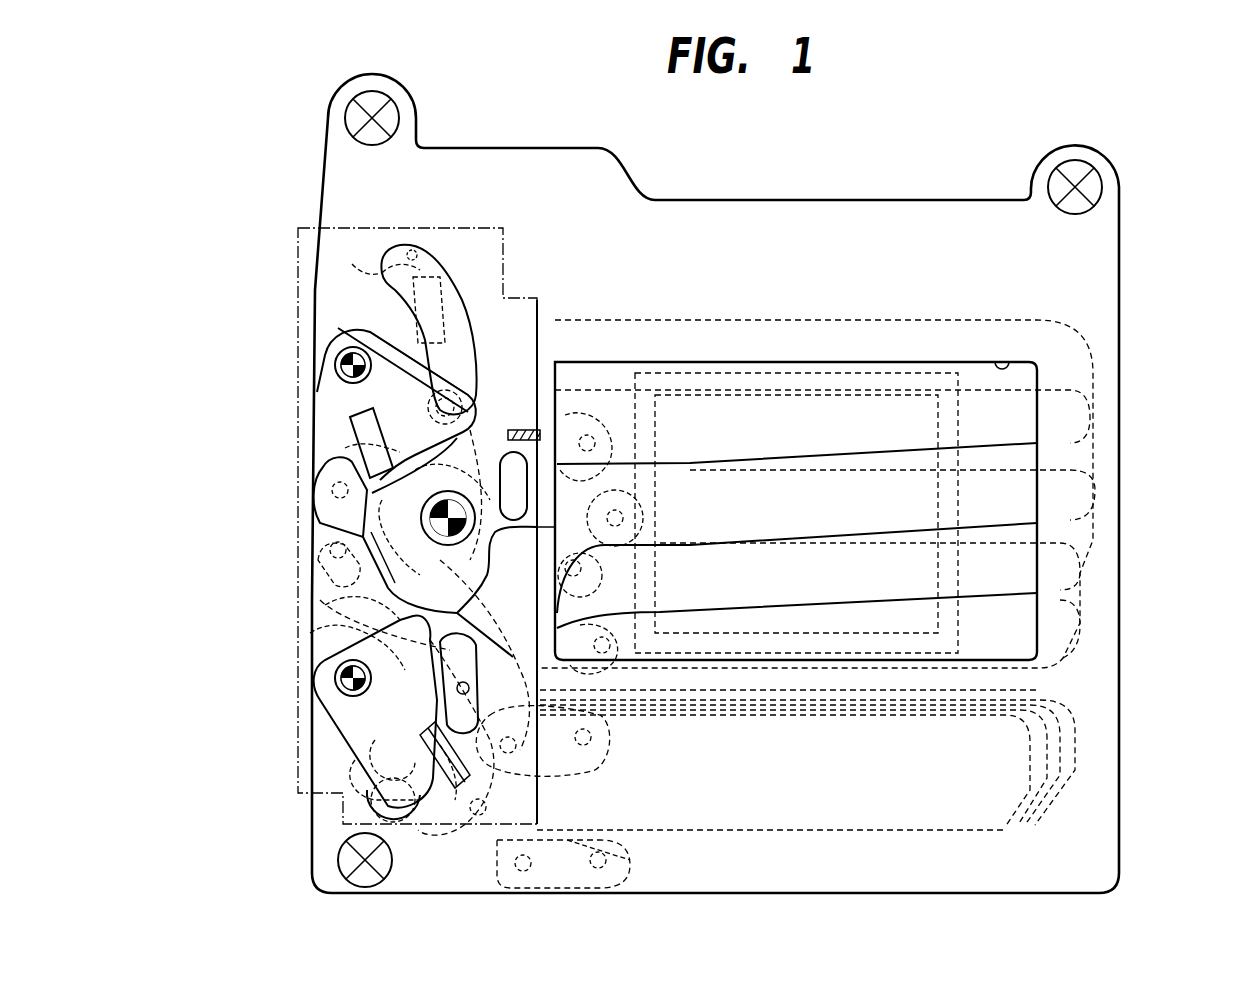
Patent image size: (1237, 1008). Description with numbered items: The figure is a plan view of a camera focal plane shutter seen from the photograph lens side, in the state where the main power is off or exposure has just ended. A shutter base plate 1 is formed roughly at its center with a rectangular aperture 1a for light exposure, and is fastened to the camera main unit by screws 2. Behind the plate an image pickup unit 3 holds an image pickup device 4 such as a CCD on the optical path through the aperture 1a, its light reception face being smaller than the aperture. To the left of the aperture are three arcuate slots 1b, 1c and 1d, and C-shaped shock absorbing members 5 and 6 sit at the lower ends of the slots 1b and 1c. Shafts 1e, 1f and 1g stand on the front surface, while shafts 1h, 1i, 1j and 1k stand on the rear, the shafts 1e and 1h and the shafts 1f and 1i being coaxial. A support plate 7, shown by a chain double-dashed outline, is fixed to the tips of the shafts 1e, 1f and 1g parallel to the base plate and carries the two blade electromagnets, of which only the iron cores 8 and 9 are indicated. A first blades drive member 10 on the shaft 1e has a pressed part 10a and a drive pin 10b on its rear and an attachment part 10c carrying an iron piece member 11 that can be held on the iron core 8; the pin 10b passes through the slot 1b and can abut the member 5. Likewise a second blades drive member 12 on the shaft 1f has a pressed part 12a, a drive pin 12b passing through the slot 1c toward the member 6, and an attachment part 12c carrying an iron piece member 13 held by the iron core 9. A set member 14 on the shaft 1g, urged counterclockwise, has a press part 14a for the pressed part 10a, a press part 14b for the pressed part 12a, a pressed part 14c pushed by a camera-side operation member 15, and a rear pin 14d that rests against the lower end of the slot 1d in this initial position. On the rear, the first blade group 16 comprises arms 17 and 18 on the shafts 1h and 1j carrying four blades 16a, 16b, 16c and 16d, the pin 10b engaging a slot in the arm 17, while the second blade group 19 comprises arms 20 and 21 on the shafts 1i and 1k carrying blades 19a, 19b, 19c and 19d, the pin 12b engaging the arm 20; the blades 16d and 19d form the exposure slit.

The shutter base plate 1 is at (862, 206).
The aperture 1a is at (1005, 363).
The arcuate slot 1b is at (515, 730).
The arcuate slot 1c is at (413, 250).
The arcuate slot 1d is at (320, 560).
The shaft 1e is at (347, 690).
The shaft 1f is at (333, 370).
The shaft 1g is at (520, 362).
The shaft 1h is at (353, 678).
The shaft 1i is at (353, 365).
The shaft 1j is at (325, 545).
The shaft 1k is at (330, 494).
The screw 2 is at (392, 114).
The image pickup unit 3 is at (950, 373).
The image pickup device 4 is at (853, 405).
The shock absorbing member 5 is at (377, 800).
The shock absorbing member 6 is at (505, 452).
The support plate 7 is at (476, 240).
The iron core 8 is at (310, 633).
The iron core 9 is at (378, 260).
The first blades drive member 10 is at (342, 718).
The pressed part 10a is at (318, 670).
The drive pin 10b is at (402, 823).
The attachment part 10c is at (447, 790).
The iron piece member 11 is at (418, 735).
The second blades drive member 12 is at (372, 330).
The pressed part 12a is at (332, 385).
The drive pin 12b is at (419, 364).
The attachment part 12c is at (345, 448).
The iron piece member 13 is at (345, 425).
The set member 14 is at (555, 497).
The press part 14a is at (623, 613).
The press part 14b is at (322, 468).
The pressed part 14c is at (560, 458).
The pin 14d is at (325, 605).
The operation member 15 is at (540, 425).
The first blade group 16 is at (1185, 700).
The blade 16a is at (1075, 730).
The blade 16b is at (1060, 775).
The blade 16c is at (1040, 812).
The blade 16d is at (1000, 830).
The arm 17 is at (592, 845).
The arm 18 is at (590, 735).
The second blade group 19 is at (1185, 352).
The blade 19a is at (1093, 373).
The blade 19b is at (1095, 450).
The blade 19c is at (1090, 535).
The blade 19d is at (1080, 620).
The arm 20 is at (660, 500).
The arm 21 is at (648, 578).